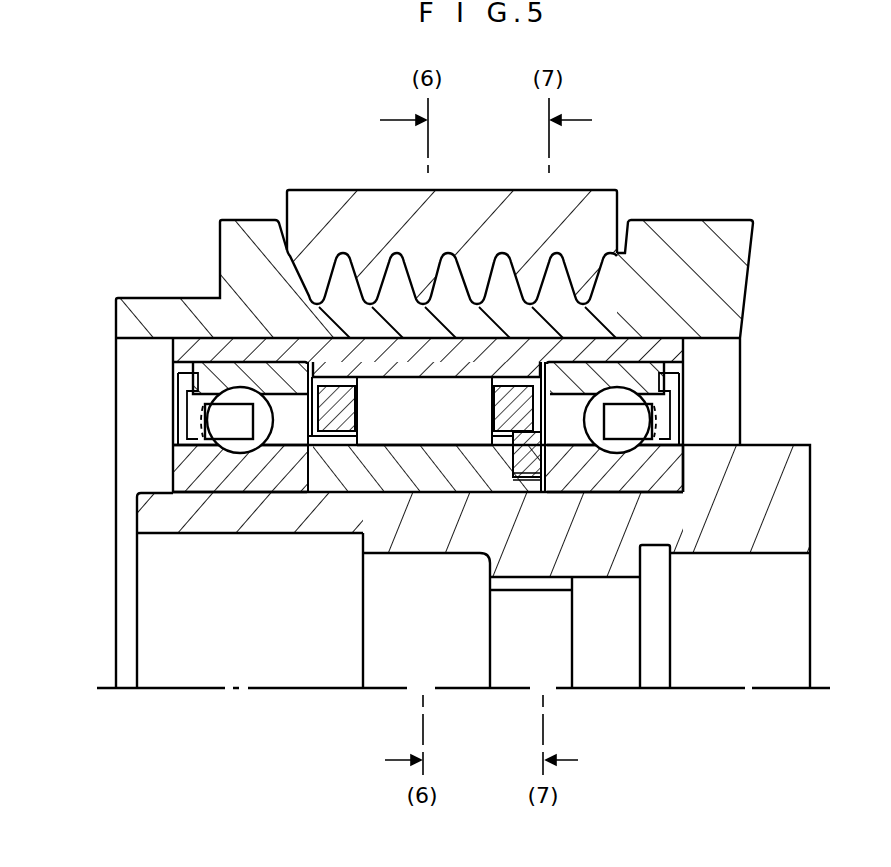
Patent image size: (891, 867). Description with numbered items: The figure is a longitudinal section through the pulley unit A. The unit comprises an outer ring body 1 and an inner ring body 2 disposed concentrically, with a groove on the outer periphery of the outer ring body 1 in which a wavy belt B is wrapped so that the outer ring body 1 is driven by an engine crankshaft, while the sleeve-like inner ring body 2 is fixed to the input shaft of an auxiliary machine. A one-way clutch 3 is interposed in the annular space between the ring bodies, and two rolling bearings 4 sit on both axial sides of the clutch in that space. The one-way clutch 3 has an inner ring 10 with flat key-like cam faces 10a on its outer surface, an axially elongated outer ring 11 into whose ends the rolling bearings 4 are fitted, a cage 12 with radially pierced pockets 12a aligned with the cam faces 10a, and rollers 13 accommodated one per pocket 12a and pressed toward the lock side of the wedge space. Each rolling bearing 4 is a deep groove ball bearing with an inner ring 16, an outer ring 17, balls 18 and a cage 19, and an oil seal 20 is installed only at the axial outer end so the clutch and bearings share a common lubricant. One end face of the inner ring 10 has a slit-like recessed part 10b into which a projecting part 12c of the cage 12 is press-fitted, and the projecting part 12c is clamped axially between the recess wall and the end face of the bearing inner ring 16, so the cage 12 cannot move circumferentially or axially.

The outer ring body 1 is at (682, 228).
The inner ring body 2 is at (795, 521).
The one-way clutch 3 is at (313, 332).
The rolling bearing 4 is at (238, 356).
The inner ring 10 is at (372, 470).
The cam face 10a is at (448, 430).
The recessed part 10b is at (530, 464).
The outer ring 11 is at (537, 354).
The cage 12 is at (340, 422).
The pocket 12a is at (352, 420).
The projecting part 12c is at (662, 548).
The roller 13 is at (440, 400).
The inner ring 16 is at (176, 484).
The outer ring 17 is at (177, 373).
The ball 18 is at (183, 476).
The cage 19 is at (203, 424).
The oil seal 20 is at (178, 394).
The pulley unit A is at (778, 212).
The belt B is at (325, 205).